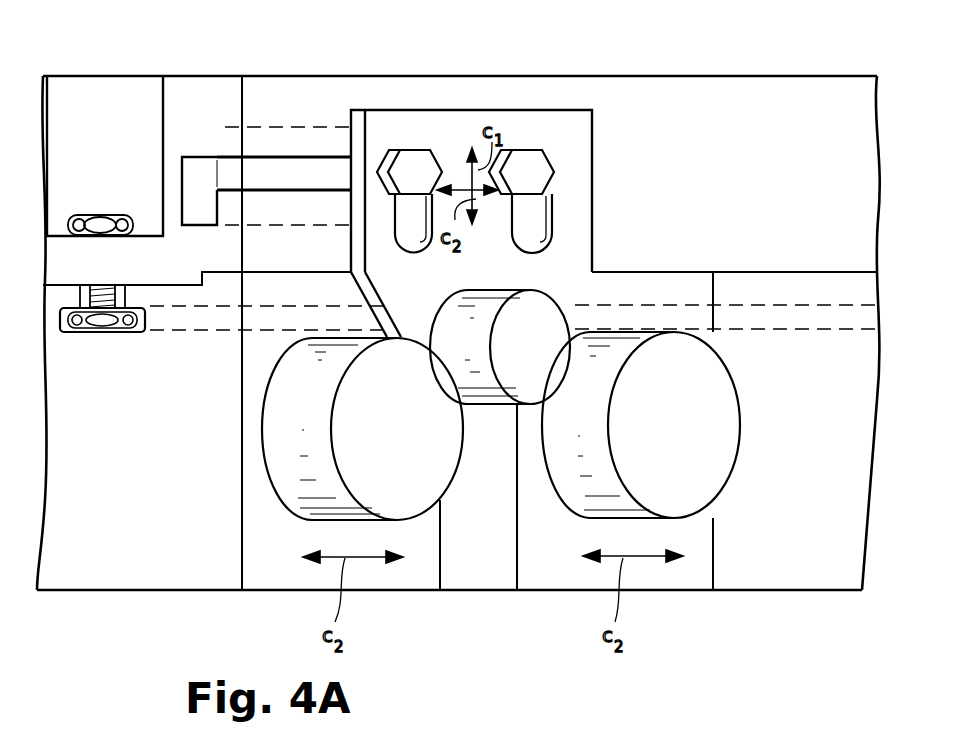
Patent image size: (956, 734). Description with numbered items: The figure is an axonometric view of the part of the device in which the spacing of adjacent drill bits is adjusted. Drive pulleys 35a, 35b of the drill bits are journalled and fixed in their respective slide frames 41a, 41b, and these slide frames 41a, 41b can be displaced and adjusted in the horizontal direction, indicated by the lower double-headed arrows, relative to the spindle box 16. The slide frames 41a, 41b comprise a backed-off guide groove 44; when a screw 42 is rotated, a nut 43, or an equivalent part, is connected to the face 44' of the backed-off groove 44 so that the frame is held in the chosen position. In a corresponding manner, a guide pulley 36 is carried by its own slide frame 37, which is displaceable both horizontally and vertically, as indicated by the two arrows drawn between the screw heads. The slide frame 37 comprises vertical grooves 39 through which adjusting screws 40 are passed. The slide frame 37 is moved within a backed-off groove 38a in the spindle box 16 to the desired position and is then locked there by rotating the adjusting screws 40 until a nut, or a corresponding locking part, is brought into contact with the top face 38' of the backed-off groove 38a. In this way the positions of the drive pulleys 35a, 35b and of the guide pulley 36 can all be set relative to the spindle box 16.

The spindle box 16 is at (168, 82).
The top face of the backed-off groove 38' is at (264, 126).
The backed-off groove 38a is at (208, 178).
The slide frame 37 is at (445, 122).
The adjusting screws 40 is at (427, 162).
The vertical grooves 39 is at (413, 248).
The screw 42 is at (103, 213).
The nut 43 is at (128, 334).
The face of the backed-off groove 44' is at (100, 347).
The backed-off guide groove 44 is at (102, 358).
The guide pulley 36 is at (548, 312).
The drive pulley 35a is at (418, 500).
The drive pulley 35b is at (693, 500).
The slide frame 41a is at (143, 572).
The slide frame 41b is at (705, 525).